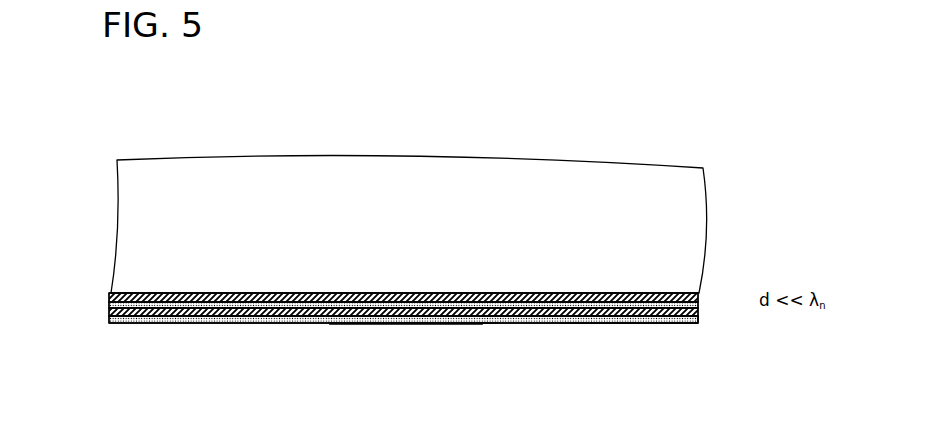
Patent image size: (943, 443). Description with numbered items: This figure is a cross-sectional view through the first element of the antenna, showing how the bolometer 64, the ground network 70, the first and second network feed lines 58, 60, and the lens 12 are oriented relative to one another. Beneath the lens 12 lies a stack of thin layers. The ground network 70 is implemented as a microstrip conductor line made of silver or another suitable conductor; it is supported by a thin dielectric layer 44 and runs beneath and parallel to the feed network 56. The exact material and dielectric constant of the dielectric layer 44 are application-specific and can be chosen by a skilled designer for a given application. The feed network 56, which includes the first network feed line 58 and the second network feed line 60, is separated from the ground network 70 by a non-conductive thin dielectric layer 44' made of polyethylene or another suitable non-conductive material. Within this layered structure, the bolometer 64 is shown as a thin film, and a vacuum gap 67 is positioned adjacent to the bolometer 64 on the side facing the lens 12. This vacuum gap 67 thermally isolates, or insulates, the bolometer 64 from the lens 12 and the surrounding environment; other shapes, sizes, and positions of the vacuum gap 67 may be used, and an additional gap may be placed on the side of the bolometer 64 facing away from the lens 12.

The lens 12 is at (601, 230).
The thin dielectric layer 44 is at (385, 269).
The non-conductive thin dielectric layer 44' is at (390, 341).
The ground network 70 is at (110, 306).
The second network feed line 60 is at (306, 325).
The first network feed line 58 is at (620, 326).
The bolometer 64 is at (334, 324).
The vacuum gap 67 is at (477, 323).
The feed network 56 is at (699, 320).